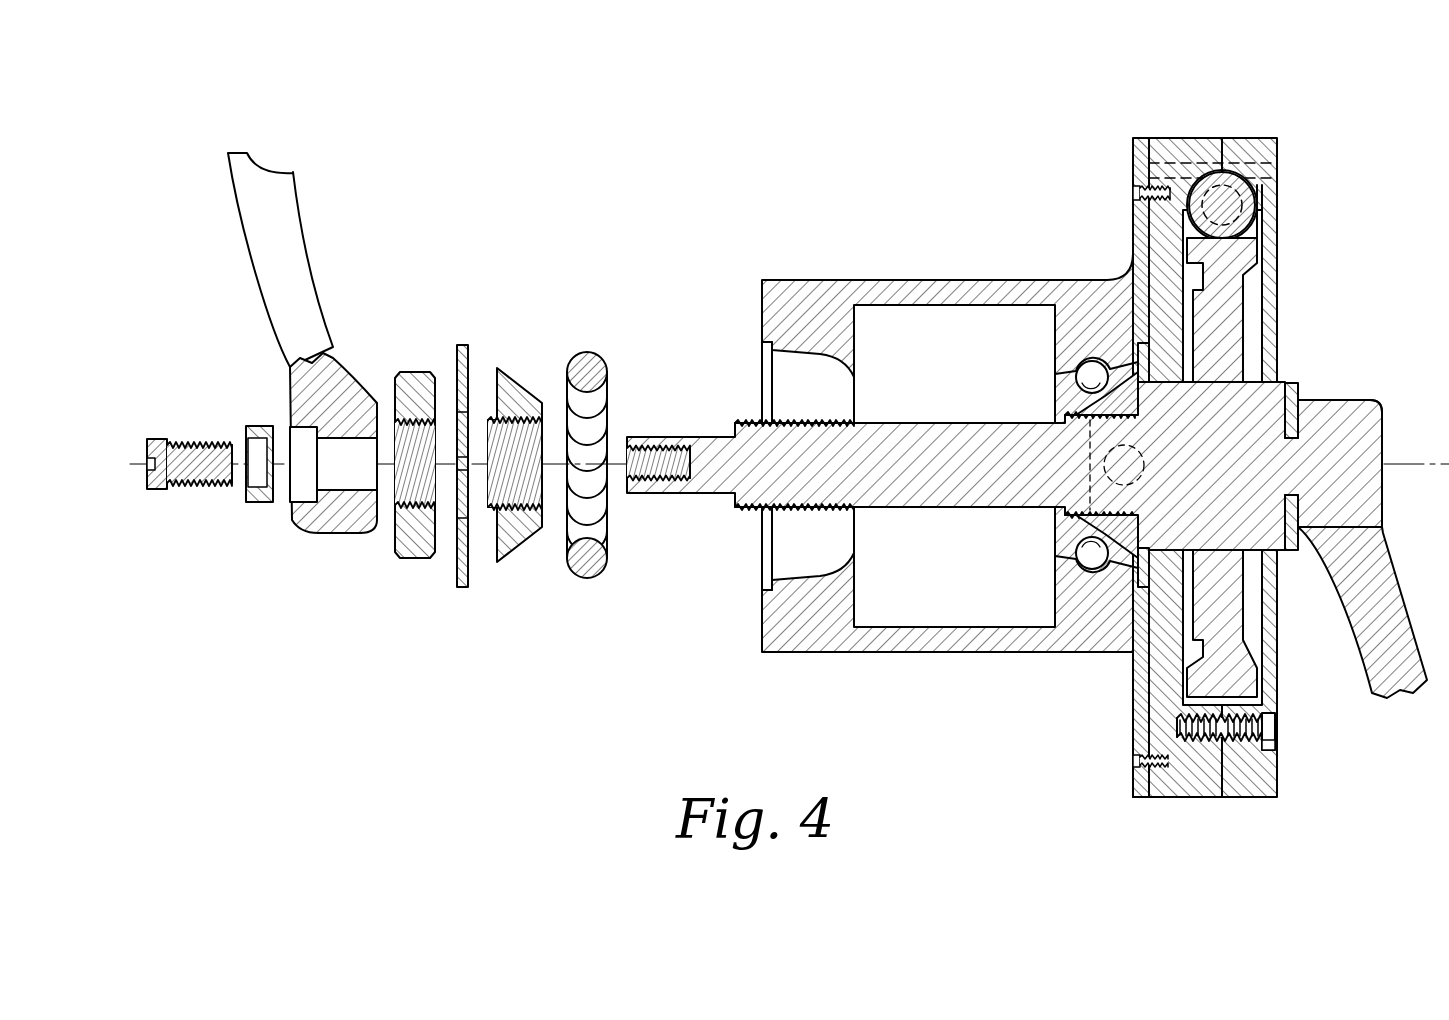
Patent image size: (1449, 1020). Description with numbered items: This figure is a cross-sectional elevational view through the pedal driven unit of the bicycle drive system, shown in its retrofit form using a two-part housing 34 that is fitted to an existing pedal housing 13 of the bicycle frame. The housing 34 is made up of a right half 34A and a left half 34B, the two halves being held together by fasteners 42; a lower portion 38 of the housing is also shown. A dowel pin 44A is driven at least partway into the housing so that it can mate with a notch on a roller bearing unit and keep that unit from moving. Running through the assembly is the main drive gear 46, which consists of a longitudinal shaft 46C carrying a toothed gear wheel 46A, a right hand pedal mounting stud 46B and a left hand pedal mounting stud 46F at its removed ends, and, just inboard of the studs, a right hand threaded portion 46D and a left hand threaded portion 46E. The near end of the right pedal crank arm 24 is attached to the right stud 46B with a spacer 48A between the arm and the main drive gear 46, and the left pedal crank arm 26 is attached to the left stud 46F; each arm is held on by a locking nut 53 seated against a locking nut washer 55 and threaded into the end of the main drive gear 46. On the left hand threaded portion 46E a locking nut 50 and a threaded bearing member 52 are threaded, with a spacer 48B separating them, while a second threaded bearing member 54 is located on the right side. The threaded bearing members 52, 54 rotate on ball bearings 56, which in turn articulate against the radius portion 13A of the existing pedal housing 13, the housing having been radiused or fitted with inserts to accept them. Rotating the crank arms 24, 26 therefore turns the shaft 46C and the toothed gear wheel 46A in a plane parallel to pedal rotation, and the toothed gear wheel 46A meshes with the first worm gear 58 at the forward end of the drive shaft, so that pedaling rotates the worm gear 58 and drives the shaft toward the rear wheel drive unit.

The pedal housing 13 is at (921, 276).
The radius portion 13A is at (822, 362).
The right pedal crank arm 24 is at (1368, 633).
The left pedal crank arm 26 is at (288, 247).
The pedal driven unit housing 34 is at (1248, 414).
The right half 34A is at (1245, 137).
The left half 34B is at (1195, 138).
The flange lower portion 38 is at (1130, 675).
The fasteners 42 is at (1131, 193).
The dowel pin 44A is at (1283, 142).
The main drive gear 46 is at (1004, 491).
The toothed gear wheel 46A is at (1240, 255).
The right hand pedal mounting stud 46B is at (1333, 438).
The longitudinal shaft 46C is at (957, 430).
The right hand threaded portion 46D is at (1087, 508).
The left hand threaded portion 46E is at (745, 423).
The left hand pedal mounting stud 46F is at (647, 497).
The spacer 48A is at (1295, 385).
The spacer 48B is at (462, 587).
The locking nut 50 is at (415, 557).
The threaded bearing member 52 is at (523, 543).
The locking nut 53 is at (197, 483).
The threaded bearing member 54 is at (1088, 408).
The locking nut washer 55 is at (260, 503).
The ball bearings 56 is at (585, 580).
The first worm gear 58 is at (1268, 200).